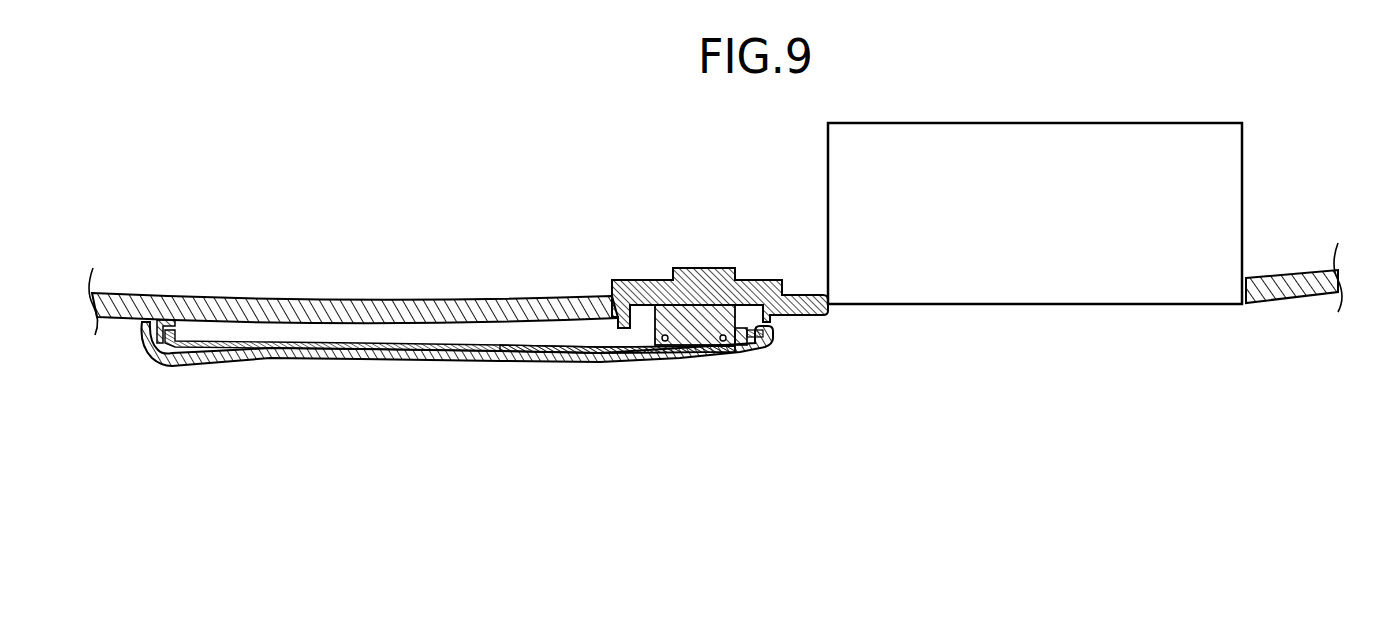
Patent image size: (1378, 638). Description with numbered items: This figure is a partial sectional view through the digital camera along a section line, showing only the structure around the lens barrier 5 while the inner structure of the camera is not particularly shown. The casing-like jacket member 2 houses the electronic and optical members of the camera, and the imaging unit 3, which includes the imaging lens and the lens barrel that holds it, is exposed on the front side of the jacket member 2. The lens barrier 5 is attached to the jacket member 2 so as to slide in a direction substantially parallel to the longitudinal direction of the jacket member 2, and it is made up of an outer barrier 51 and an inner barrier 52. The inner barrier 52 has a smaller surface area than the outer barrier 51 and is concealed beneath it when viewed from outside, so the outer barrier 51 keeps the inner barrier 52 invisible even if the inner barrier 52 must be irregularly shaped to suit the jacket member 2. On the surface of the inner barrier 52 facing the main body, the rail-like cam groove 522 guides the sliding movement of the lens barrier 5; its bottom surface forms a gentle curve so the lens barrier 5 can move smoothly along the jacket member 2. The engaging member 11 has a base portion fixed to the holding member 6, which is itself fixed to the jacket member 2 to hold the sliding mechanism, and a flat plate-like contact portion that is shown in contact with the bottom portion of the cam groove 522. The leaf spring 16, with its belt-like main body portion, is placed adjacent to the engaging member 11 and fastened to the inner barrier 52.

The jacket member 2 is at (281, 318).
The leaf spring 16 is at (157, 330).
The lens barrier 5 is at (457, 357).
The outer barrier 51 is at (283, 358).
The inner barrier 52 is at (357, 355).
The cam groove 522 is at (525, 346).
The holding member 6 is at (643, 280).
The engaging member 11 is at (698, 333).
The imaging unit 3 is at (1108, 270).